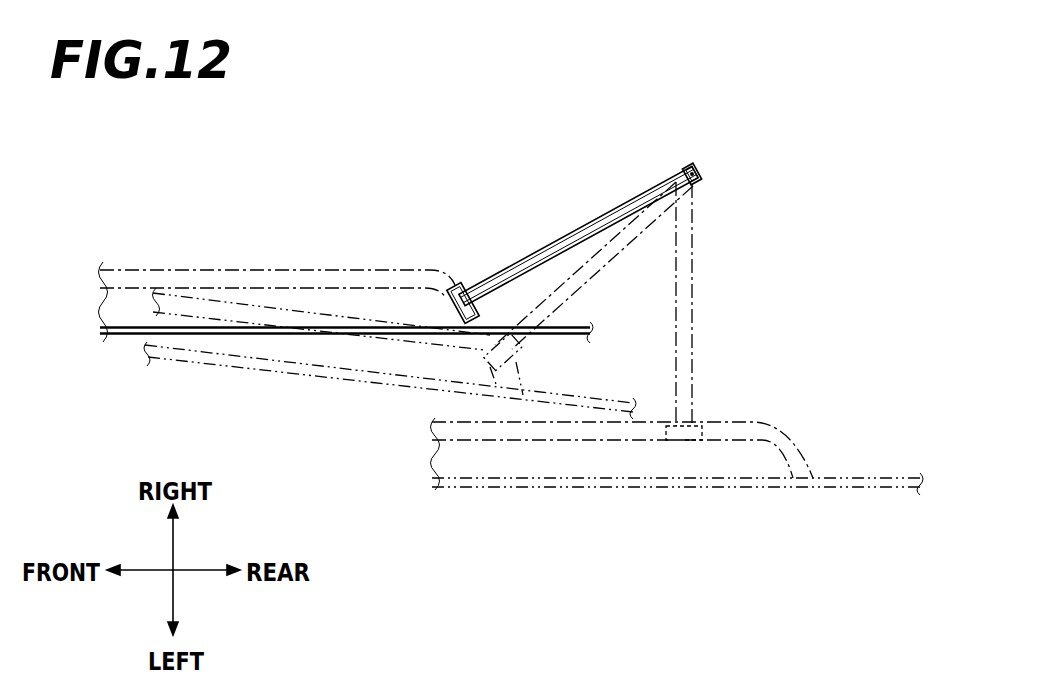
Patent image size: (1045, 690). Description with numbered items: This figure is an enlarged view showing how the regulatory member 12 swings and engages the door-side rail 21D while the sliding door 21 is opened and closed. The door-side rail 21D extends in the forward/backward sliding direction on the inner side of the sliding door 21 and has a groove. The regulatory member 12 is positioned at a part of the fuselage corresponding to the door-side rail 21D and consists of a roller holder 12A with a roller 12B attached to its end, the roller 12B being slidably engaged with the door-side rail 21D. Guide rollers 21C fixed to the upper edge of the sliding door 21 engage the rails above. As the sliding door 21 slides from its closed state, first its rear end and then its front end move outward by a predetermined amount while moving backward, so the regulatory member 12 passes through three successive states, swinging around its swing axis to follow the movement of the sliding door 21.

The regulatory member 12 is at (625, 271).
The roller holder 12A is at (522, 267).
The roller 12B is at (452, 293).
The sliding door 21 is at (490, 417).
The guide roller 21C is at (684, 172).
The door-side rail 21D is at (279, 271).